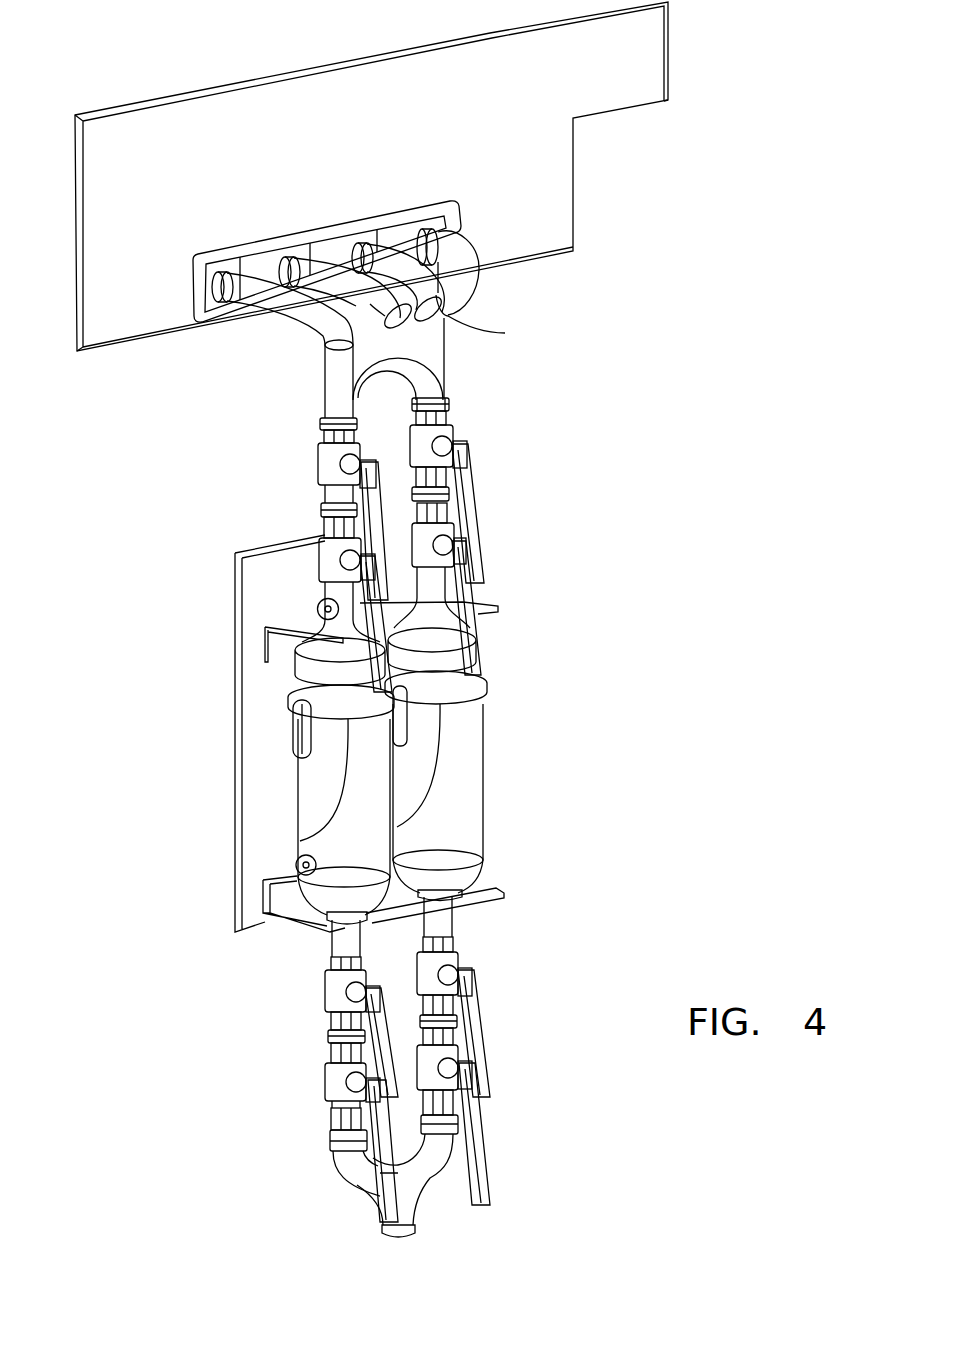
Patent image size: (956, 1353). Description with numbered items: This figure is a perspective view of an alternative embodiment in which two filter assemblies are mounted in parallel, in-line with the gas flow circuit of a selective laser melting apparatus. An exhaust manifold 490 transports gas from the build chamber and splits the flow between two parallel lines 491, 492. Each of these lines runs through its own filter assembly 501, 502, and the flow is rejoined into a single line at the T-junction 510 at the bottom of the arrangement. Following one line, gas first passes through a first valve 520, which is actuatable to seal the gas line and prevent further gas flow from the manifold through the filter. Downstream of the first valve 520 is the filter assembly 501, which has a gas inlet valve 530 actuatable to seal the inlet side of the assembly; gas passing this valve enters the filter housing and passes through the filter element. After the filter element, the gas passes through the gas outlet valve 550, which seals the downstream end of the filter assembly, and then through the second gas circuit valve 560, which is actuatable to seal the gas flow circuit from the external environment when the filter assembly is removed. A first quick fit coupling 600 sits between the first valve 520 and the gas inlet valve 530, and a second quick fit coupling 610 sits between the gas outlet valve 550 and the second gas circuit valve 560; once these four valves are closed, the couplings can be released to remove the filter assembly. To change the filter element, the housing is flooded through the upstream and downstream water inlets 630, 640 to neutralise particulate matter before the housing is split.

The exhaust manifold 490 is at (448, 322).
The parallel line 491 is at (307, 423).
The parallel line 492 is at (467, 417).
The first valve 520 is at (323, 463).
The first quick fit coupling 600 is at (323, 510).
The gas inlet valve 530 is at (330, 563).
The upstream water inlet 630 is at (318, 607).
The filter assembly 501 is at (313, 793).
The filter assembly 502 is at (472, 763).
The downstream water inlet 640 is at (298, 865).
The gas outlet valve 550 is at (327, 990).
The second quick fit coupling 610 is at (330, 1037).
The second gas circuit valve 560 is at (330, 1087).
The T-junction 510 is at (423, 1203).